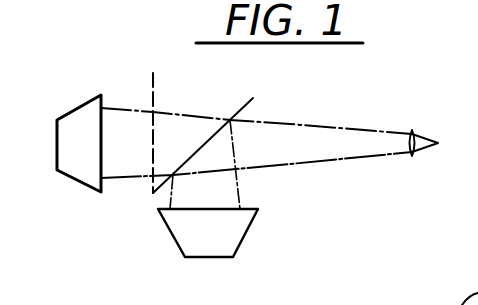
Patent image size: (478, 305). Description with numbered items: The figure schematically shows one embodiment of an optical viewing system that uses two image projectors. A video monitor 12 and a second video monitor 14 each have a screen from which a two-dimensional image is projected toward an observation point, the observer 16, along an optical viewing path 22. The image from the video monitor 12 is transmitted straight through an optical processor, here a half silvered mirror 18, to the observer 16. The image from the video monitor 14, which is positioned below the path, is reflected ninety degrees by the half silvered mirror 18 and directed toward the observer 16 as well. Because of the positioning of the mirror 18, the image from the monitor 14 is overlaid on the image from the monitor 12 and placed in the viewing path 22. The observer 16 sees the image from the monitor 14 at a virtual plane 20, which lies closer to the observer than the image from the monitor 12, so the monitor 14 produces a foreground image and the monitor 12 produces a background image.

The video monitor 12 is at (57, 172).
The video monitor 14 is at (200, 258).
The observer 16 is at (430, 137).
The half silvered mirror 18 is at (251, 98).
The virtual plane 20 is at (152, 80).
The optical viewing path 22 is at (291, 150).